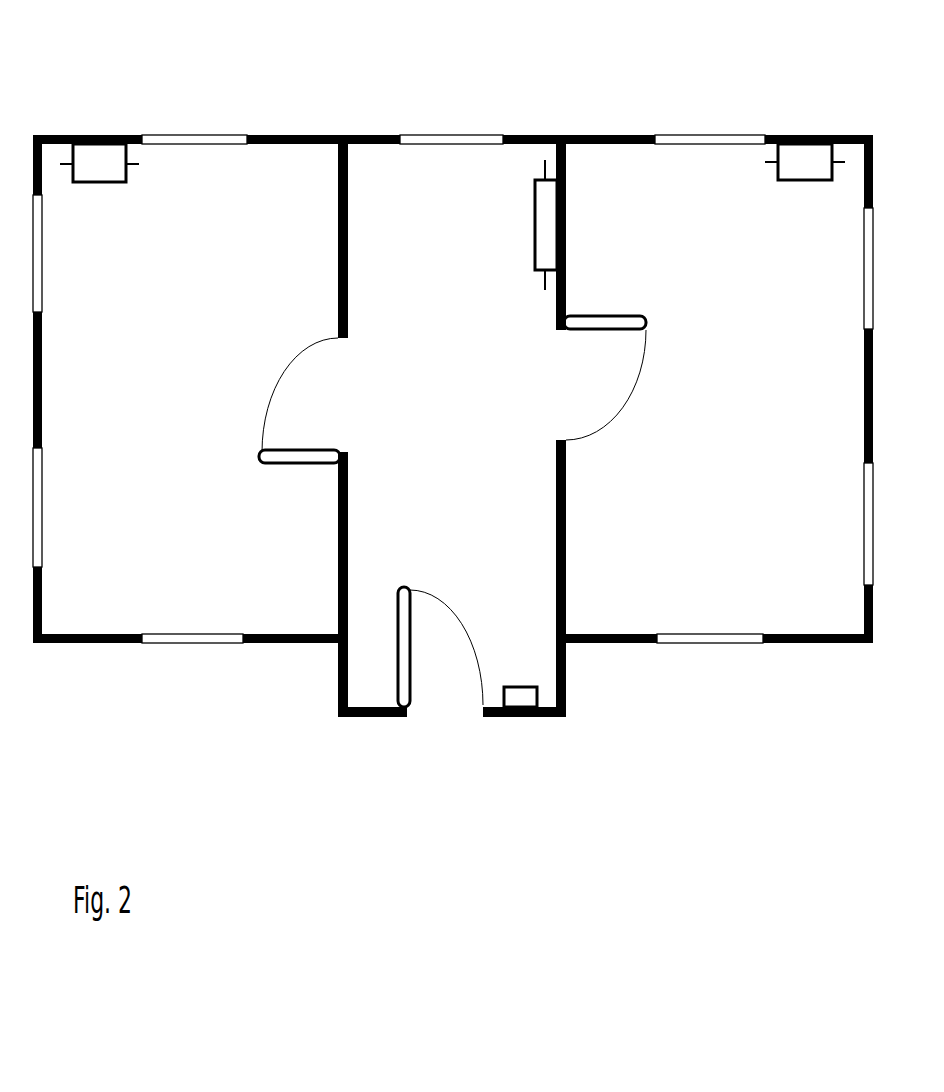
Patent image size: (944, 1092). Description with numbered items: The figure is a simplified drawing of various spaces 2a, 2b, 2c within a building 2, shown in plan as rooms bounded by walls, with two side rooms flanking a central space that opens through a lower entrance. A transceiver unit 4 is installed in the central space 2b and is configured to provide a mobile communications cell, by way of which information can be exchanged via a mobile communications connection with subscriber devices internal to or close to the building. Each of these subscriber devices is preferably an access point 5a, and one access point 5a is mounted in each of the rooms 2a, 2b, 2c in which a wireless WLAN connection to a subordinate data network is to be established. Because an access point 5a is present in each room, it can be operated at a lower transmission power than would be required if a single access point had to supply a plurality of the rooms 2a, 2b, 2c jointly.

The building 2 is at (282, 134).
The space 2a is at (171, 498).
The space 2b is at (446, 476).
The space 2c is at (734, 440).
The access point 5a is at (104, 168).
The transceiver unit 4 is at (516, 686).